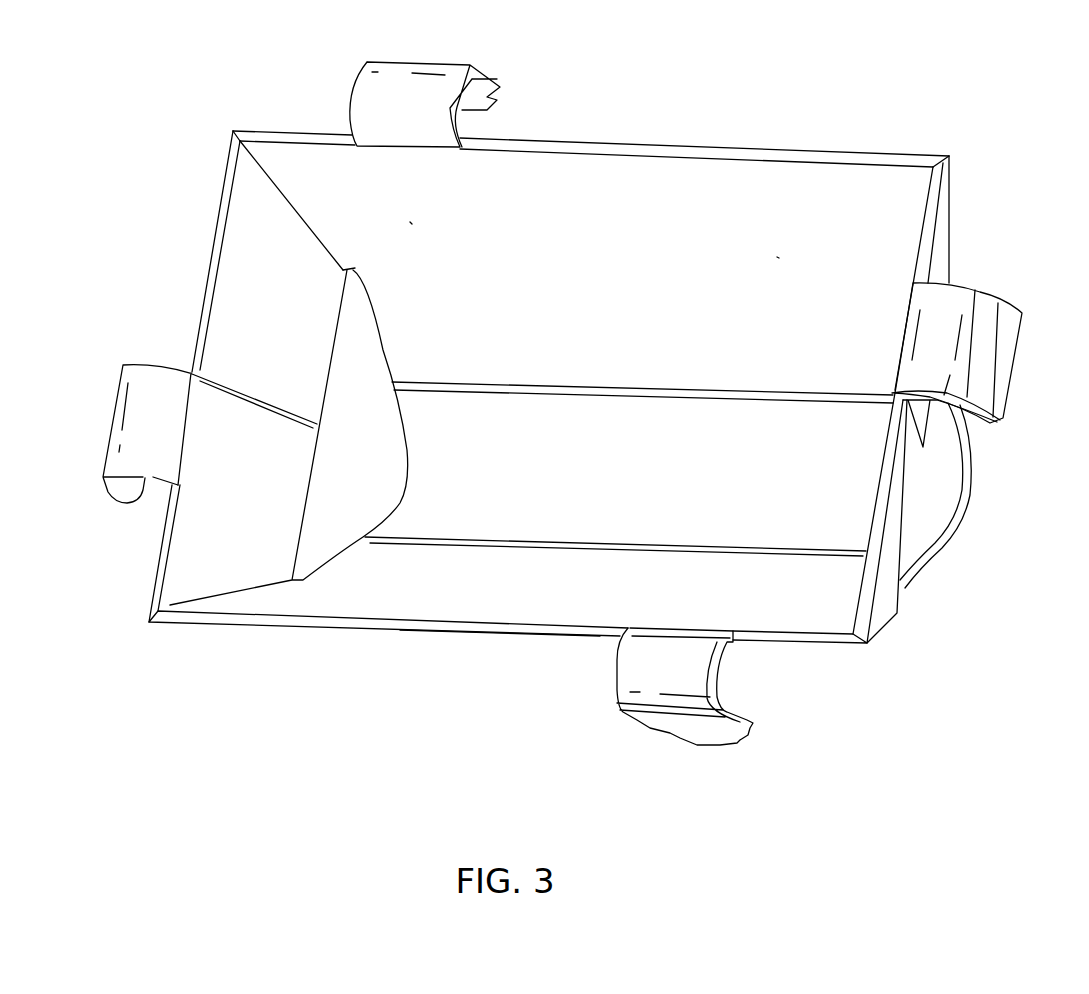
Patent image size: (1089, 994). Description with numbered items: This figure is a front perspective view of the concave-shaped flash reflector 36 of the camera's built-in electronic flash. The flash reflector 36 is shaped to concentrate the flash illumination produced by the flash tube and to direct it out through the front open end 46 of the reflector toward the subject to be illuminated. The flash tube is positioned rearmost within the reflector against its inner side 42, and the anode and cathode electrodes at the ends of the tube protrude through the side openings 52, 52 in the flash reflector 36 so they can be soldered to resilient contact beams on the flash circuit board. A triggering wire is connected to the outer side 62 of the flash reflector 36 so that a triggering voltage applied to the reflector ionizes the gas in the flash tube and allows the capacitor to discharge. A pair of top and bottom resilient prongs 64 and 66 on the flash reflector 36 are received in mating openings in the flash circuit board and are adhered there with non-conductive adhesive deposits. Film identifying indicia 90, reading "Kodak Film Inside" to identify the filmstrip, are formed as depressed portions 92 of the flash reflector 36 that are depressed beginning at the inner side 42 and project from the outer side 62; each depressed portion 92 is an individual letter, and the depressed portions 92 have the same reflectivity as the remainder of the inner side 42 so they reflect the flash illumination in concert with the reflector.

The flash reflector 36 is at (757, 147).
The inner side 42 is at (643, 492).
The front open end 46 is at (478, 617).
The side openings 52 is at (396, 510).
The outer side 62 is at (942, 562).
The top resilient prong 64 is at (435, 62).
The bottom resilient prong 66 is at (718, 742).
The film identifying indicia 90 is at (356, 208).
The depressed portions 92 is at (480, 232).